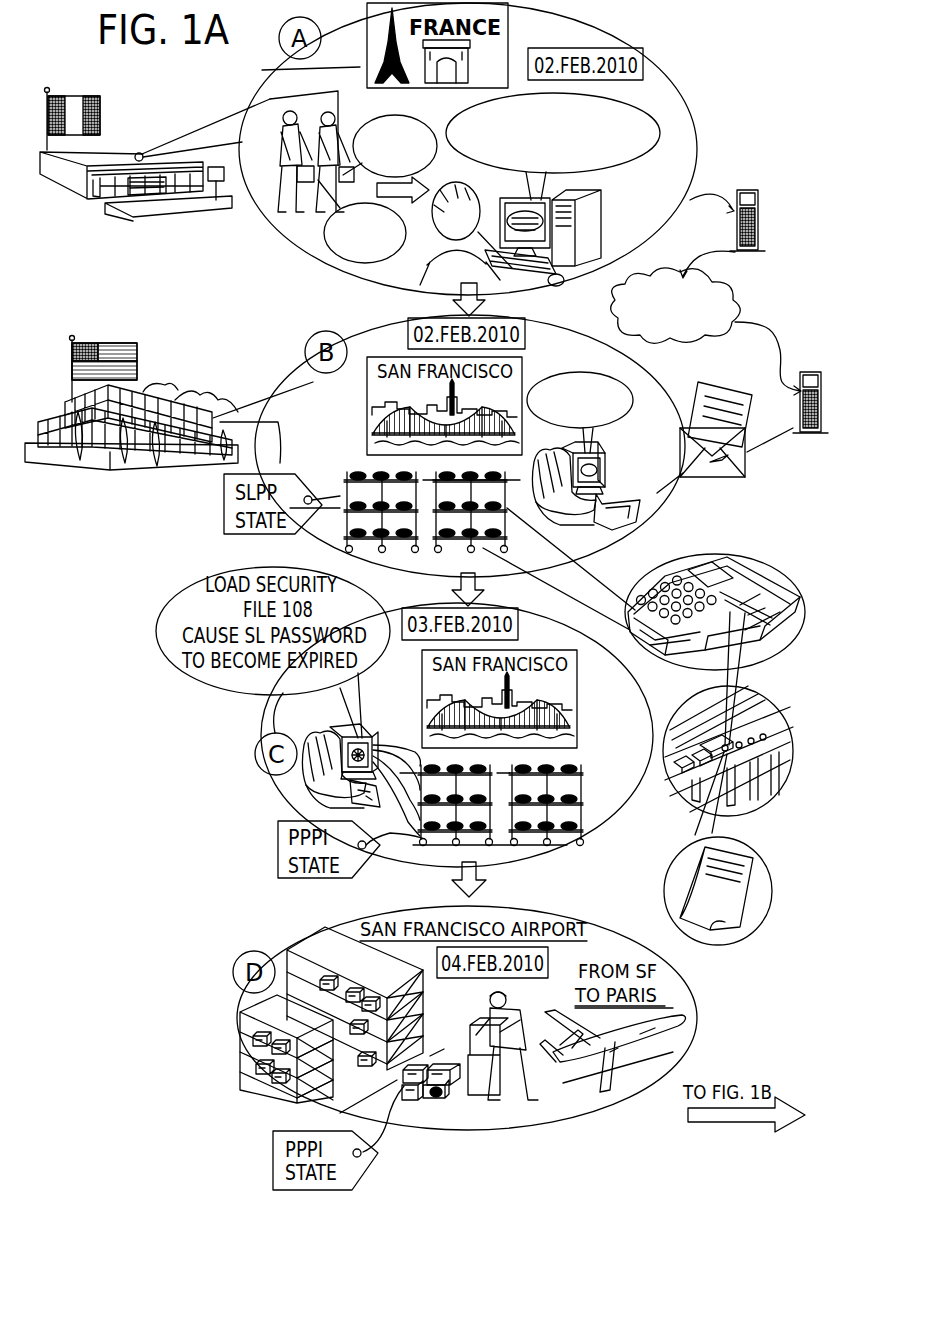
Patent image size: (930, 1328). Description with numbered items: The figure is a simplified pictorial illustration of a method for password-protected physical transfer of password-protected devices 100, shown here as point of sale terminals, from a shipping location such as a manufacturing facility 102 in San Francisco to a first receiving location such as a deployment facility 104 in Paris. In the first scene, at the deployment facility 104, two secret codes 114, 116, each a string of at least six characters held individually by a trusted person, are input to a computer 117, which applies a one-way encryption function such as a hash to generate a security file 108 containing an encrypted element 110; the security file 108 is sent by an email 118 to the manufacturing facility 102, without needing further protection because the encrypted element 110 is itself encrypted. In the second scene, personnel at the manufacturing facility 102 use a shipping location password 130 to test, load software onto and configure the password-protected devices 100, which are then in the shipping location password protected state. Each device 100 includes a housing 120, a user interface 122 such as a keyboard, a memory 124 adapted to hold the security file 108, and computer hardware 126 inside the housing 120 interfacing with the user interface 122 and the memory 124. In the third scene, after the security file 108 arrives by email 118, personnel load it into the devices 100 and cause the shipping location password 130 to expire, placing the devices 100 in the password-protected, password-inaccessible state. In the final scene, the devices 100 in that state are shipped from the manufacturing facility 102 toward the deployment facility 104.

The password-protected devices 100 is at (353, 474).
The manufacturing facility 102 is at (176, 370).
The deployment facility 104 is at (131, 120).
The security file 108 is at (703, 636).
The encrypted element 110 is at (720, 397).
The secret code 114 is at (390, 118).
The secret code 116 is at (386, 262).
The computer 117 is at (601, 205).
The email 118 is at (727, 467).
The housing 120 is at (715, 597).
The user interface 122 is at (670, 585).
The memory 124 is at (741, 742).
The computer hardware 126 is at (793, 743).
The shipping location password 130 is at (606, 424).